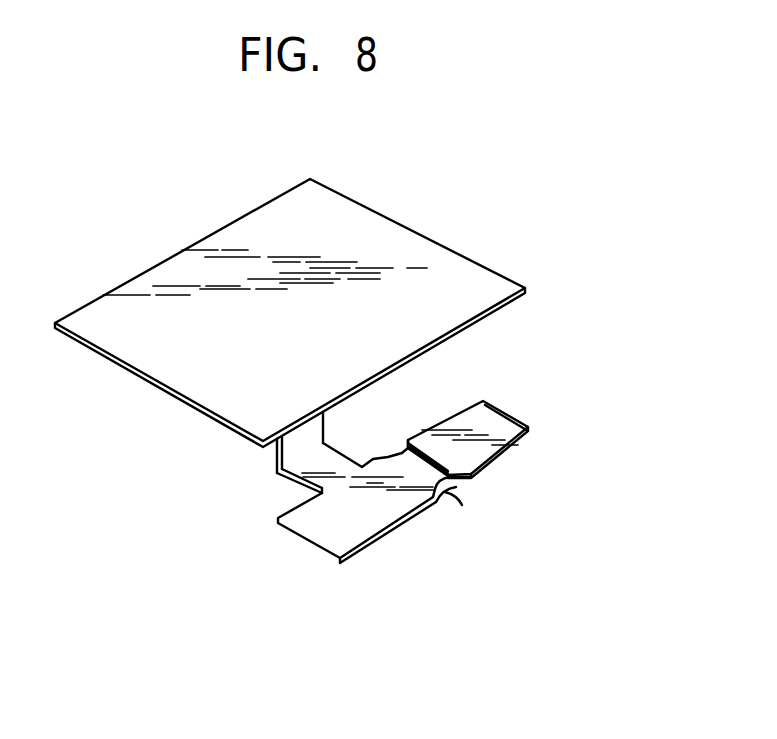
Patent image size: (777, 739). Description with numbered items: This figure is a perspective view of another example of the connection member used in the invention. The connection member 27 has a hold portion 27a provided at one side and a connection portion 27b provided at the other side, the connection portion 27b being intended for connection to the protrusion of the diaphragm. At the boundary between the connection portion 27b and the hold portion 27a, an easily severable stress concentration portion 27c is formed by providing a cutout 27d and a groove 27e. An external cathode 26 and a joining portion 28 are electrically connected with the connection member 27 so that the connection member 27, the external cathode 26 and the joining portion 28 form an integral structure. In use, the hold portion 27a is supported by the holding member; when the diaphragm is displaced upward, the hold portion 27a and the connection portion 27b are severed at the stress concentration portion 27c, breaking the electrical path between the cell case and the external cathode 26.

The external cathode 26 is at (396, 257).
The connection member 27 is at (430, 542).
The hold portion 27a is at (353, 511).
The connection portion 27b is at (520, 437).
The stress concentration portion 27c is at (433, 452).
The cutout 27d is at (450, 490).
The groove 27e is at (426, 464).
The joining portion 28 is at (312, 466).